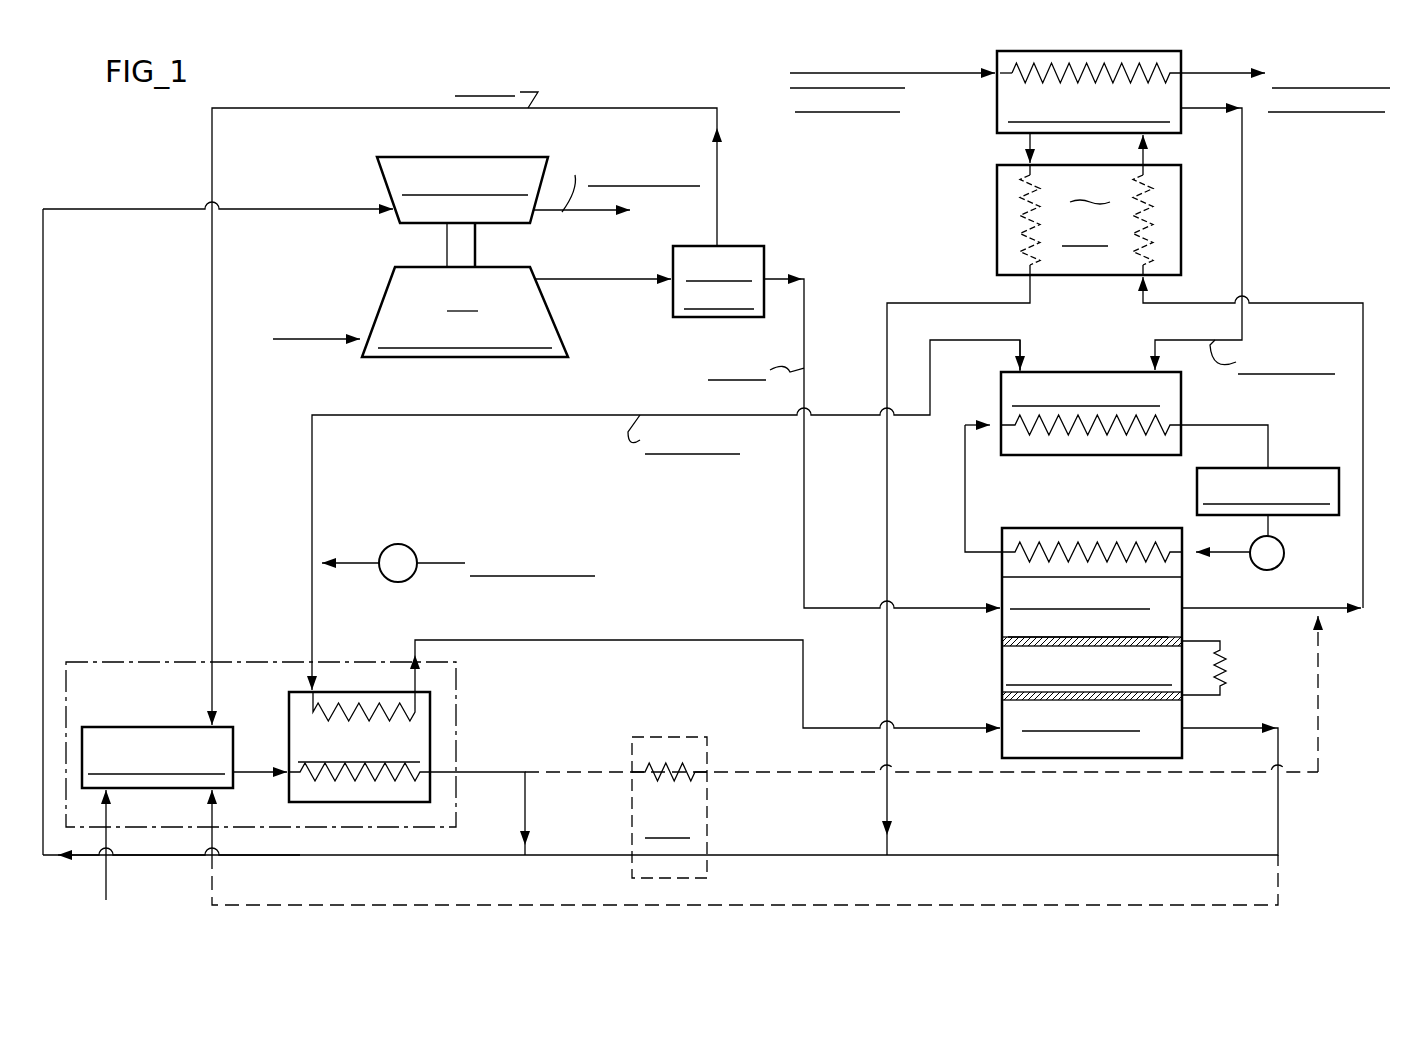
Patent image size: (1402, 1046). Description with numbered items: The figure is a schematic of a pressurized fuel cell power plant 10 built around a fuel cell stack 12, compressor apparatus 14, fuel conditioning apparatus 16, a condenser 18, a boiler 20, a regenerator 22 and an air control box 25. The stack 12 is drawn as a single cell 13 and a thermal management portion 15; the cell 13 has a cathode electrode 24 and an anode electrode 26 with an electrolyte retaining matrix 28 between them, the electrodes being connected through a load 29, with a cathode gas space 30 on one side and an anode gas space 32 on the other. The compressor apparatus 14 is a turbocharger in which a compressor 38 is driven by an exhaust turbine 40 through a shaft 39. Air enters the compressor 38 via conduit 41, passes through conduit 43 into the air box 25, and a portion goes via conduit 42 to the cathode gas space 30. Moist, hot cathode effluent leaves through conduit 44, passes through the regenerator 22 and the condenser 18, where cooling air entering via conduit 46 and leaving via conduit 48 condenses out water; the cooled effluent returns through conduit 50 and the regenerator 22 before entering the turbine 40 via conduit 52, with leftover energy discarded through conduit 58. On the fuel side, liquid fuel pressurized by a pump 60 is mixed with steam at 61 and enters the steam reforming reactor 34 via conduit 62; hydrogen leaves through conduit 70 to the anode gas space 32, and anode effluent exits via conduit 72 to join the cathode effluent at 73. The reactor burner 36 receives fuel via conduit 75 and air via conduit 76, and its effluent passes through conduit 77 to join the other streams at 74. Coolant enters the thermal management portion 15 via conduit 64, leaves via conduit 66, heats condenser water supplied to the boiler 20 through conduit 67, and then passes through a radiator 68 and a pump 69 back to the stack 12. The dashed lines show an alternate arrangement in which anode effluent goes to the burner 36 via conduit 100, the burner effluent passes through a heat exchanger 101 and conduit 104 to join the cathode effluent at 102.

The power plant 10 is at (852, 185).
The fuel cell stack 12 is at (1025, 526).
The cell 13 is at (1002, 664).
The compressor apparatus 14 is at (366, 155).
The thermal management portion 15 is at (1058, 548).
The fuel conditioning apparatus 16 is at (458, 695).
The condenser 18 is at (997, 92).
The boiler 20 is at (1088, 372).
The regenerator 22 is at (1089, 220).
The cathode electrode 24 is at (1002, 641).
The air control box 25 is at (758, 248).
The anode electrode 26 is at (1002, 698).
The electrolyte retaining matrix 28 is at (1002, 668).
The load 29 is at (1224, 672).
The cathode gas space 30 is at (1168, 590).
The anode gas space 32 is at (1182, 715).
The steam reforming reactor 34 is at (345, 700).
The reactor burner 36 is at (124, 727).
The compressor 38 is at (465, 312).
The shaft 39 is at (447, 245).
The exhaust turbine 40 is at (478, 223).
The conduit 41 is at (306, 340).
The conduit 42 is at (804, 496).
The conduit 43 is at (598, 282).
The conduit 44 is at (1363, 394).
The conduit 46 is at (930, 73).
The conduit 48 is at (1216, 73).
The conduit 50 is at (1030, 148).
The conduit 52 is at (278, 215).
The conduit 58 is at (560, 215).
The pump 60 is at (410, 546).
The mixing point 61 is at (312, 562).
The conduit 62 is at (312, 600).
The conduit 64 is at (1225, 552).
The conduit 66 is at (965, 502).
The conduit 67 is at (1244, 168).
The radiator 68 is at (1308, 468).
The pump 69 is at (1284, 552).
The conduit 70 is at (480, 640).
The conduit 72 is at (1082, 855).
The combining point 73 is at (892, 860).
The combining point 74 is at (528, 858).
The conduit 75 is at (106, 870).
The conduit 76 is at (645, 108).
The conduit 77 is at (508, 772).
The conduit 100 is at (1100, 905).
The heat exchanger 101 is at (655, 737).
The combining point 102 is at (1318, 612).
The conduit 104 is at (790, 775).